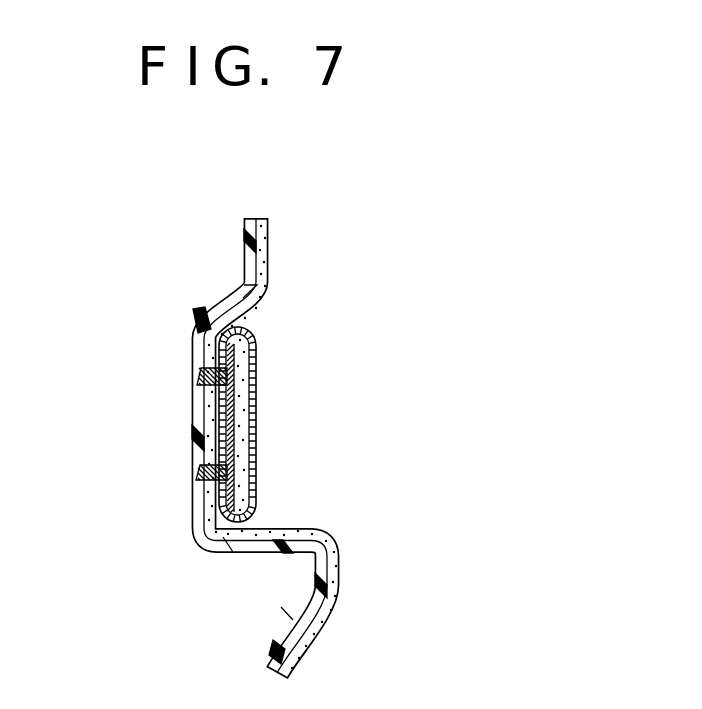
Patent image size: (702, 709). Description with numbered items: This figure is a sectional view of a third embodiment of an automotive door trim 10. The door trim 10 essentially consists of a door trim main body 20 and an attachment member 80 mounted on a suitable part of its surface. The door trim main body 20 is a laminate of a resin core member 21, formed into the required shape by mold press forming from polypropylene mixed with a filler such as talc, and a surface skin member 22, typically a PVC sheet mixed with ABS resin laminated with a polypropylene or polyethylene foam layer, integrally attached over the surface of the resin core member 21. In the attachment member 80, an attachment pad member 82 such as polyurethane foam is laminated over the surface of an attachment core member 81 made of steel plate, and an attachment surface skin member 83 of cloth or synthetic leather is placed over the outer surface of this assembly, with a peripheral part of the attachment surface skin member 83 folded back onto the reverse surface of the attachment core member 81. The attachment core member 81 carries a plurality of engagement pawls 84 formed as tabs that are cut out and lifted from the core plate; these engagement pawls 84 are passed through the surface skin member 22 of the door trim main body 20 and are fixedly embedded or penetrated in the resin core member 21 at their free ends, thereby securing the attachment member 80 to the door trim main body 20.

The automotive door trim 10 is at (248, 430).
The door trim main body 20 is at (207, 436).
The resin core member 21 is at (243, 242).
The surface skin member 22 is at (257, 281).
The attachment member 80 is at (286, 424).
The attachment core member 81 is at (238, 413).
The attachment pad member 82 is at (243, 444).
The attachment surface skin member 83 is at (255, 489).
The engagement pawls 84 is at (192, 466).